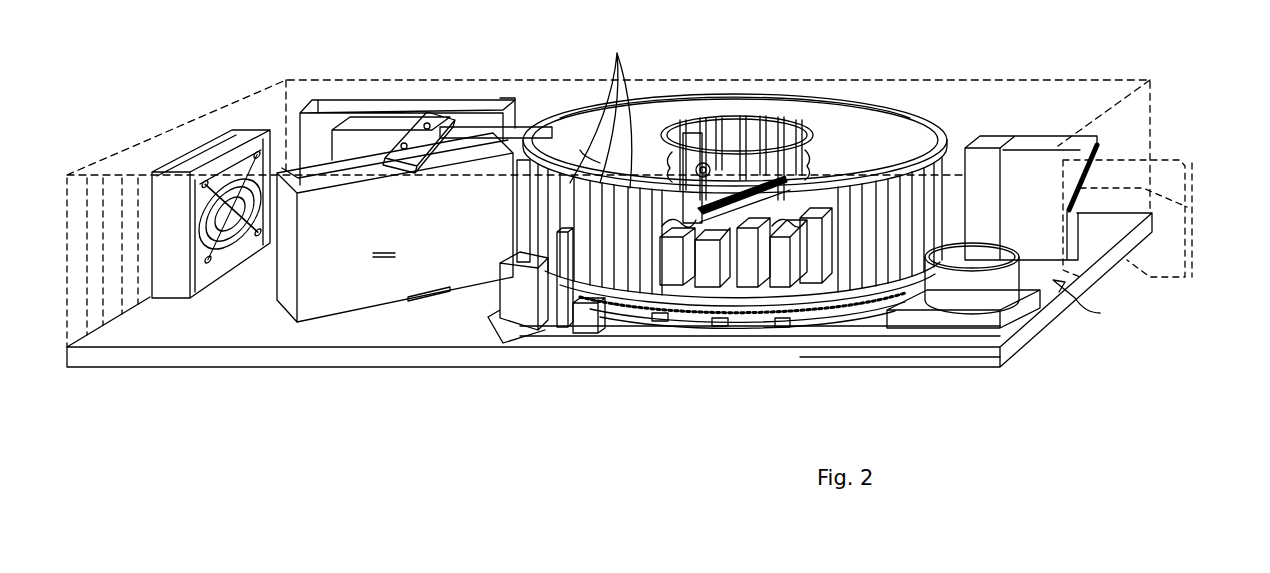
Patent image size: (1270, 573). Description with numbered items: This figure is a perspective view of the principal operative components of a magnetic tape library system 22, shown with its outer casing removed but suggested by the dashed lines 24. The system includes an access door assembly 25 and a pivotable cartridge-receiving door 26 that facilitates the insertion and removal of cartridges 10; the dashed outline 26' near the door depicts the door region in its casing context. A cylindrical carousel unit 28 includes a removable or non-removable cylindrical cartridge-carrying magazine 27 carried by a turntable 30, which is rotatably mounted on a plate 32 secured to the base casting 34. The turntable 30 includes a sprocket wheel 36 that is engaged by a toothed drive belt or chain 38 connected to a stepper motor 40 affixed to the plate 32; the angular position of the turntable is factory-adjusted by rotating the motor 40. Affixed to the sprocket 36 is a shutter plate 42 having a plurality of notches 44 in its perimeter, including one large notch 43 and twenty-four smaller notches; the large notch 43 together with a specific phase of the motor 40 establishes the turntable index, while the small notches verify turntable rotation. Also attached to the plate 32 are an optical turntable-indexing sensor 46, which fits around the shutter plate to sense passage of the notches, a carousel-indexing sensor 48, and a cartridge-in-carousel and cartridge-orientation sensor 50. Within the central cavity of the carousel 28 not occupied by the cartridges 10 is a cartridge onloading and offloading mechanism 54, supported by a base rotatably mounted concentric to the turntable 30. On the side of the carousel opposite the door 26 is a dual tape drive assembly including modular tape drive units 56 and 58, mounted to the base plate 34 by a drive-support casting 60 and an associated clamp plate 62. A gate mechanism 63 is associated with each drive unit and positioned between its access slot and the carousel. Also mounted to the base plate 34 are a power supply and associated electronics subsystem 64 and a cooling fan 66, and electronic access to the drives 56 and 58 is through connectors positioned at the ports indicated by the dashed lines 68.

The cartridges 10 is at (1206, 162).
The magnetic tape library system 22 is at (457, 377).
The dashed lines 24 is at (979, 82).
The access door assembly 25 is at (1090, 303).
The pivotable cartridge-receiving door 26 is at (1077, 187).
The alternate bracket position 26' is at (1155, 218).
The cylindrical cartridge-carrying magazine 27 is at (695, 108).
The cylindrical carousel unit 28 is at (880, 103).
The turntable 30 is at (880, 305).
The plate 32 is at (867, 330).
The base casting 34 is at (948, 357).
The sprocket wheel 36 is at (862, 322).
The toothed drive belt or chain 38 is at (830, 315).
The stepper motor 40 is at (955, 290).
The shutter plate 42 is at (790, 318).
The large notch 43 is at (657, 330).
The notches 44 is at (722, 322).
The optical turntable-indexing sensor 46 is at (590, 335).
The carousel-indexing sensor 48 is at (560, 327).
The cartridge-in-carousel and cartridge-orientation sensor 50 is at (527, 315).
The cartridge onloading and offloading mechanism 54 is at (727, 184).
The modular tape drive unit 56 is at (395, 227).
The modular tape drive unit 58 is at (503, 108).
The drive-support casting 60 is at (425, 300).
The clamp plate 62 is at (420, 120).
The gate mechanism 63 is at (518, 259).
The power supply and associated electronics subsystem 64 is at (350, 105).
The cooling fan 66 is at (215, 153).
The dashed lines 68 is at (100, 300).